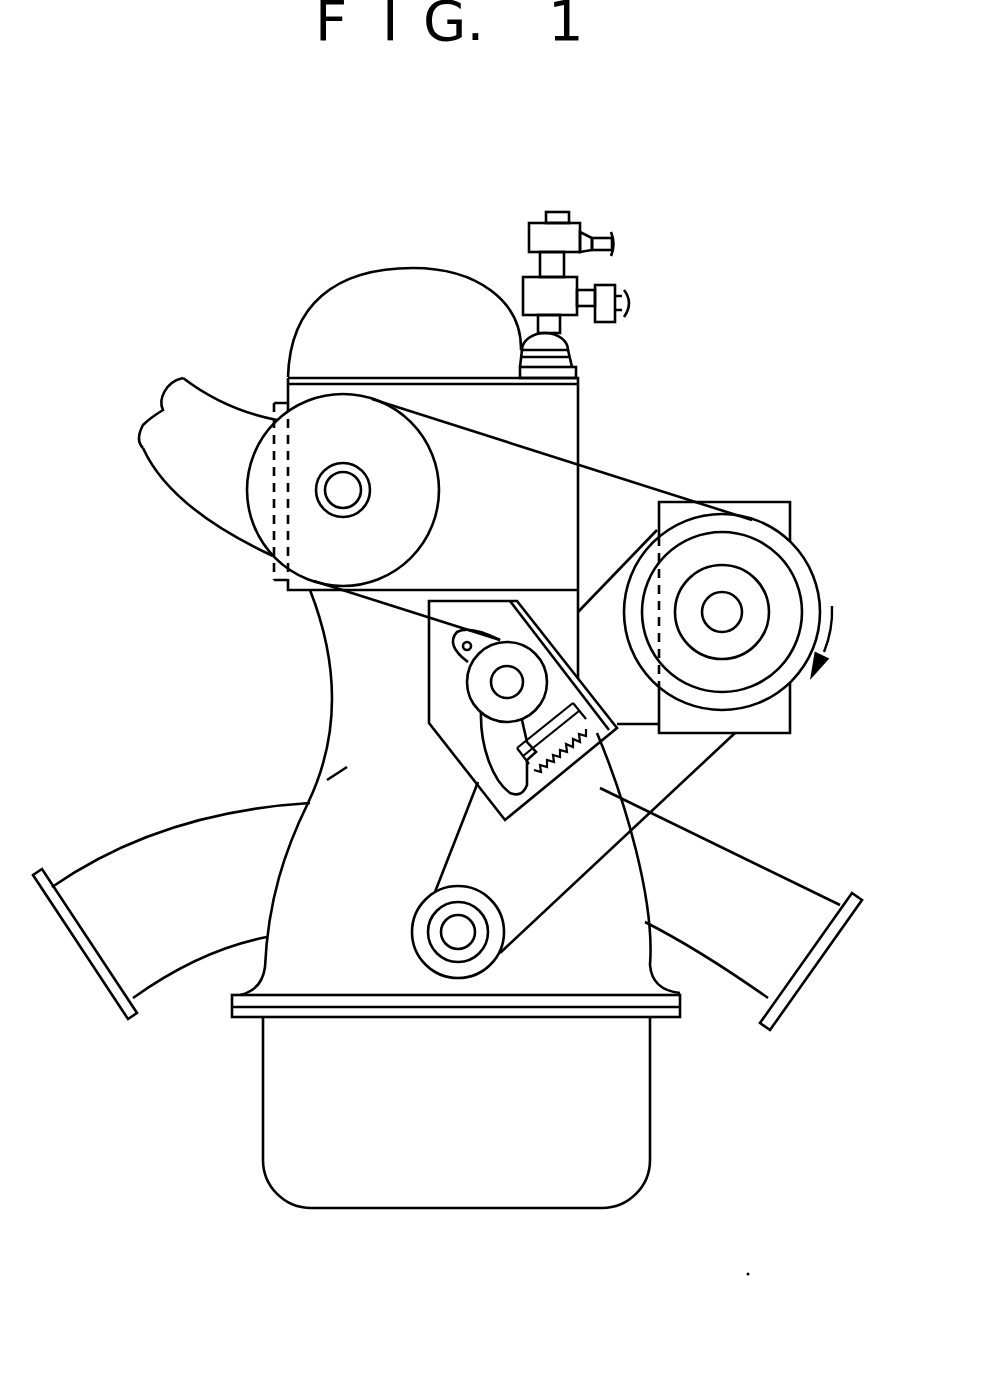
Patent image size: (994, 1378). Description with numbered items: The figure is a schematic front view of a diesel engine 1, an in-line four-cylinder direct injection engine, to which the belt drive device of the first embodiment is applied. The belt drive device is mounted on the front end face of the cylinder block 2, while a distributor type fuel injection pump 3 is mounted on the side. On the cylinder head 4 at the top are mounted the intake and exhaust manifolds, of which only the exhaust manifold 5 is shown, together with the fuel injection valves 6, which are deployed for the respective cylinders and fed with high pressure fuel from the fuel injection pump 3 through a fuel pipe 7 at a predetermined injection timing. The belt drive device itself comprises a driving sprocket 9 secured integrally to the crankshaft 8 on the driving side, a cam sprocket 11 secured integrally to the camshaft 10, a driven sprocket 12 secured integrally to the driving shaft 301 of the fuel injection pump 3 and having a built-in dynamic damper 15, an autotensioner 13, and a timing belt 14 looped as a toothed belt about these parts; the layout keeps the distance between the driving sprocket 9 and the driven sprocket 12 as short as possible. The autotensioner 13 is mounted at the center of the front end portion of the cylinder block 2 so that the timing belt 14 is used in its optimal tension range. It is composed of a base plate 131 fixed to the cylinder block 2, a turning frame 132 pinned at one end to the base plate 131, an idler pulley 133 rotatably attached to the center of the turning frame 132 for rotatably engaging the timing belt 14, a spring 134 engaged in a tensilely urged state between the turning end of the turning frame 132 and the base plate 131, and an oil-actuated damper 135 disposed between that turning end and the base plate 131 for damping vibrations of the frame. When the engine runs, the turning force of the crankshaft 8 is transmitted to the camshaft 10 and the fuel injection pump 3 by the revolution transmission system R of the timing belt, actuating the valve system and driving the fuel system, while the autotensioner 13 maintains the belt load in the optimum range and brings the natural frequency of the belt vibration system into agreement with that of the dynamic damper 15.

The diesel engine 1 is at (706, 417).
The cylinder block 2 is at (357, 643).
The distributor type fuel injection pump 3 is at (765, 513).
The driving shaft 301 is at (723, 606).
The cylinder head 4 is at (557, 420).
The exhaust manifold 5 is at (202, 438).
The fuel injection valves 6 is at (550, 267).
The fuel pipe 7 is at (627, 302).
The crankshaft 8 is at (463, 937).
The driving sprocket 9 is at (440, 960).
The camshaft 10 is at (343, 493).
The cam sprocket 11 is at (330, 430).
The driven sprocket 12 is at (780, 620).
The autotensioner 13 is at (392, 713).
The base plate 131 is at (507, 623).
The turning frame 132 is at (430, 723).
The idler pulley 133 is at (482, 687).
The spring 134 is at (548, 763).
The oil-actuated damper 135 is at (573, 713).
The timing belt 14 is at (717, 743).
The dynamic damper 15 is at (752, 620).
The revolution transmission system R is at (222, 500).